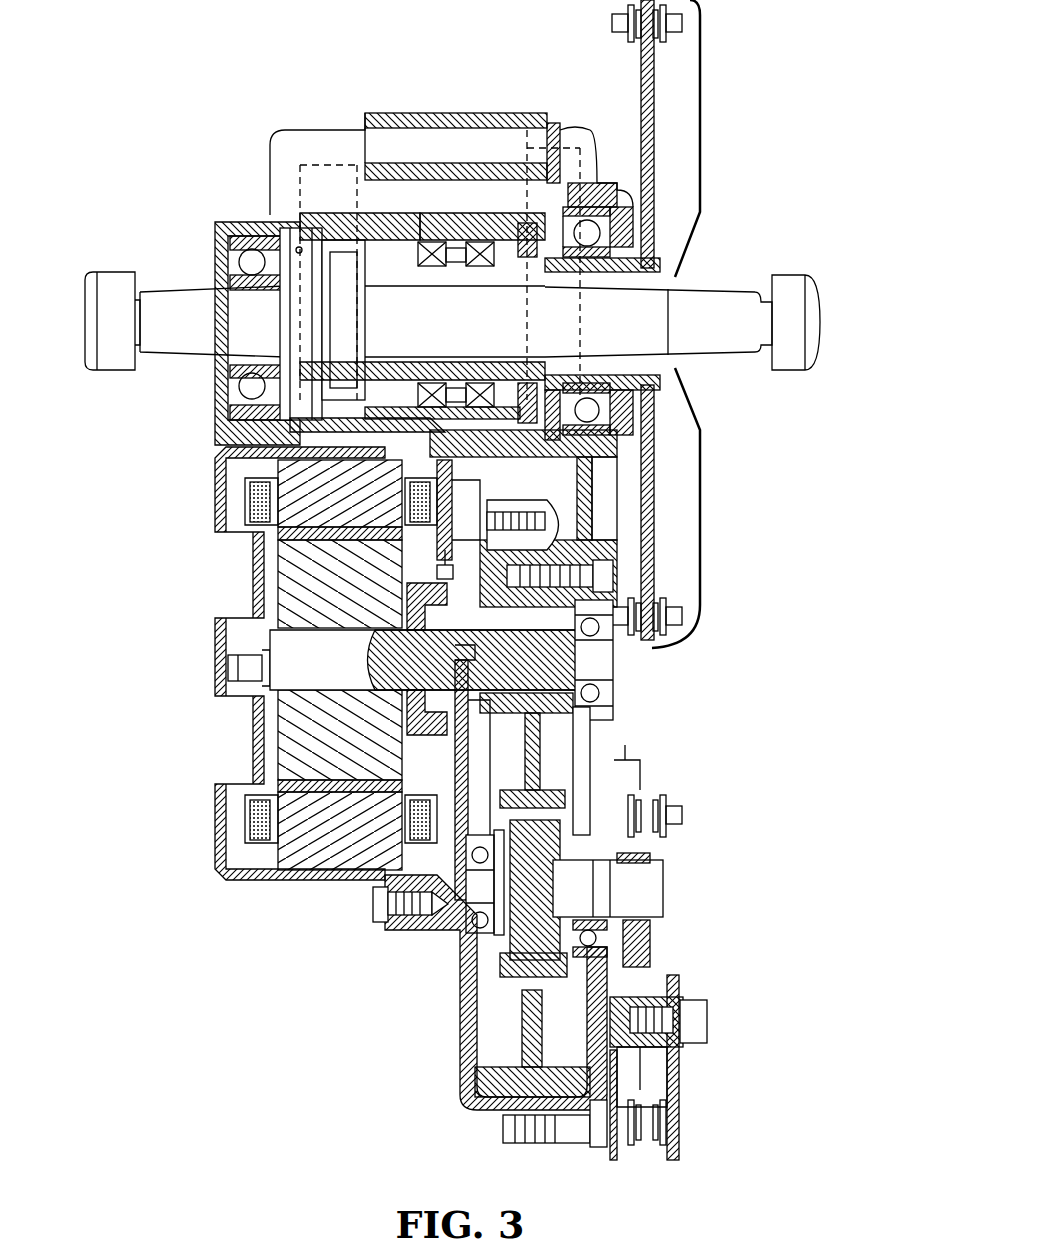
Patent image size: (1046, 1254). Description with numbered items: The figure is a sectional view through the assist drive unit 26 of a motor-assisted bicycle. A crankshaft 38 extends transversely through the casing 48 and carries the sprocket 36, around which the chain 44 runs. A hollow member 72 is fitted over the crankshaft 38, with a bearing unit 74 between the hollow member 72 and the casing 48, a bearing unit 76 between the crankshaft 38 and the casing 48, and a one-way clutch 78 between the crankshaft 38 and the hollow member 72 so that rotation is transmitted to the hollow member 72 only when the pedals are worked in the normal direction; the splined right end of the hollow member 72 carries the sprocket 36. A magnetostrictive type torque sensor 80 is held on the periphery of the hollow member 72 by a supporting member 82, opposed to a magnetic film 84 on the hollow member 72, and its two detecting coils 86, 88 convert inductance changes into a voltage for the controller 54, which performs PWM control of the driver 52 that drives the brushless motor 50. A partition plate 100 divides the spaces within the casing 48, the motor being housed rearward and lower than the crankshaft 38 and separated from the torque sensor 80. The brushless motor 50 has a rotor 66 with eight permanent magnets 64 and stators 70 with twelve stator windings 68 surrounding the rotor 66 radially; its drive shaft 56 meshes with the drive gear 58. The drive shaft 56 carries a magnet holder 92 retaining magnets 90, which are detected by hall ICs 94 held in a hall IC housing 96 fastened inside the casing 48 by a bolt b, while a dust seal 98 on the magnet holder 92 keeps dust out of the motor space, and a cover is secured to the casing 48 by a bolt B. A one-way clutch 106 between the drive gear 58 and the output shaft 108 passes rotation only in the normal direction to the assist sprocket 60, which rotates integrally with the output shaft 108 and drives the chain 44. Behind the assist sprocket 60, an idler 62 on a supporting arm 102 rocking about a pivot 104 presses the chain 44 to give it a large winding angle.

The assist drive unit 26 is at (397, 940).
The sprocket 36 is at (660, 103).
The crankshaft 38 is at (710, 305).
The chain 44 is at (668, 27).
The casing 48 is at (272, 126).
The brushless motor 50 is at (245, 690).
The driver 52 is at (322, 162).
The controller 54 is at (543, 145).
The drive shaft 56 is at (595, 665).
The drive gear 58 is at (545, 740).
The assist sprocket 60 is at (645, 835).
The idler 62 is at (660, 1143).
The permanent magnets 64 is at (285, 546).
The rotor 66 is at (310, 592).
The stator windings 68 is at (245, 820).
The stators 70 is at (327, 845).
The hollow member 72 is at (288, 232).
The bearing unit 74 is at (592, 232).
The bearing unit 76 is at (247, 262).
The one-way clutch 78 is at (292, 292).
The magnetostrictive type torque sensor 80 is at (437, 250).
The supporting member 82 is at (395, 228).
The magnetic film 84 is at (520, 300).
The detecting coil 86 is at (440, 270).
The detecting coil 88 is at (490, 270).
The magnets 90 is at (380, 600).
The magnet holder 92 is at (432, 737).
The hall ICs 94 is at (443, 555).
The hall IC housing 96 is at (443, 500).
The dust seal 98 is at (480, 720).
The partition plate 100 is at (527, 457).
The supporting arm 102 is at (672, 1088).
The pivot 104 is at (683, 1062).
The one-way clutch 106 is at (540, 832).
The output shaft 108 is at (650, 885).
The bolt B is at (375, 912).
The bolt b is at (470, 532).